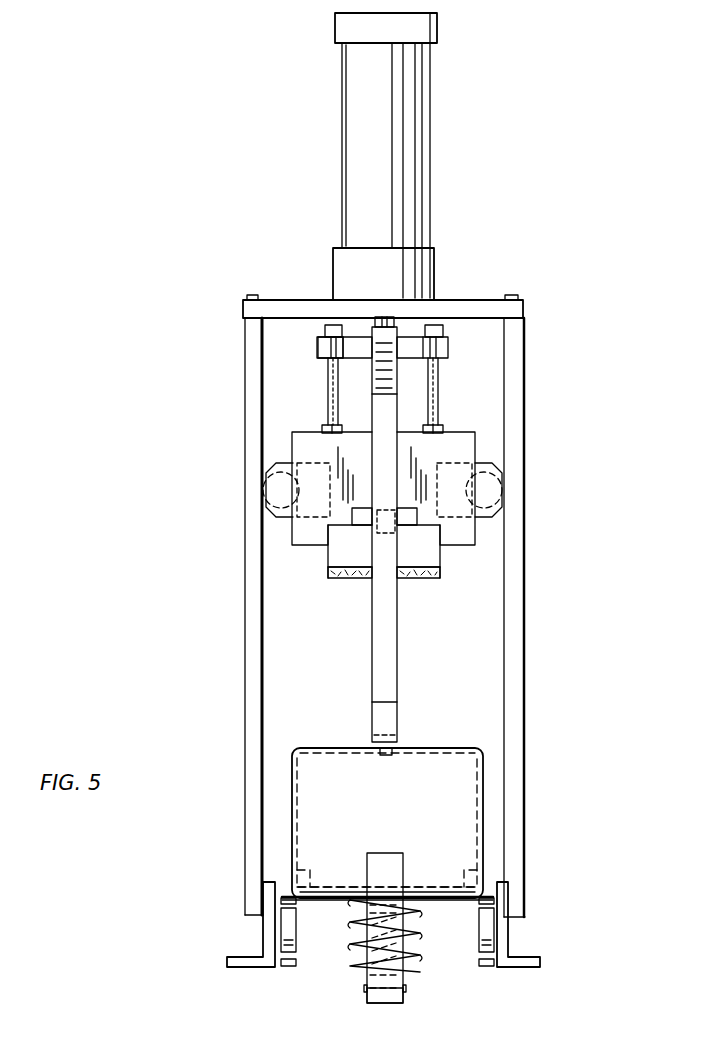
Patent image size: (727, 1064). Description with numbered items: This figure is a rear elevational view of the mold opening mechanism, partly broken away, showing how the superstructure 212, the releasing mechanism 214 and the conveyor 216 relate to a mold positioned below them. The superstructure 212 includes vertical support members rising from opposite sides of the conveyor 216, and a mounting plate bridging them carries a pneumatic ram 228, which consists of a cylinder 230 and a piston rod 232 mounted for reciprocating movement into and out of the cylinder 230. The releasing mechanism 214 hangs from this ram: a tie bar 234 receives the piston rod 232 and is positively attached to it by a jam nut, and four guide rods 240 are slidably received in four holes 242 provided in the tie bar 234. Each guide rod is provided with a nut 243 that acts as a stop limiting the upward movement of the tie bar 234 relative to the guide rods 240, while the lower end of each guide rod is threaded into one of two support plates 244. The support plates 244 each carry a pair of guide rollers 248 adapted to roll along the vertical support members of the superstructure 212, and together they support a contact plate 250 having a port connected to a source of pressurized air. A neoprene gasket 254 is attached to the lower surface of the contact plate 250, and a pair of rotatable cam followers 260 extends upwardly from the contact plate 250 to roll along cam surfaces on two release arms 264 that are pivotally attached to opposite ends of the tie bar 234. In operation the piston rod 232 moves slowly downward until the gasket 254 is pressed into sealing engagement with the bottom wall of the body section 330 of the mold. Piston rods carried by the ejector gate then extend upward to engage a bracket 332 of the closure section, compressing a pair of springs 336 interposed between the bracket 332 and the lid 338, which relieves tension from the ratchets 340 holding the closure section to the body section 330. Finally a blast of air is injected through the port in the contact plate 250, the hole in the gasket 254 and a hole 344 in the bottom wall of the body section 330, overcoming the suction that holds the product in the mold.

The superstructure 212 is at (316, 244).
The releasing mechanism 214 is at (552, 317).
The conveyor 216 is at (548, 919).
The pneumatic ram 228 is at (405, 143).
The cylinder 230 is at (413, 95).
The piston rod 232 is at (405, 317).
The tie bar 234 is at (447, 344).
The guide rods 240 is at (330, 390).
The holes 242 is at (318, 348).
The nut 243 is at (311, 317).
The support plates 244 is at (305, 445).
The guide rollers 248 is at (265, 503).
The contact plate 250 is at (338, 568).
The neoprene gasket 254 is at (412, 578).
The cam followers 260 is at (412, 578).
The release arms 264 is at (398, 411).
The body section 330 is at (483, 778).
The bracket 332 is at (403, 1002).
The springs 336 is at (350, 966).
The lid 338 is at (318, 885).
The ratchets 340 is at (386, 862).
The hole 344 is at (388, 757).